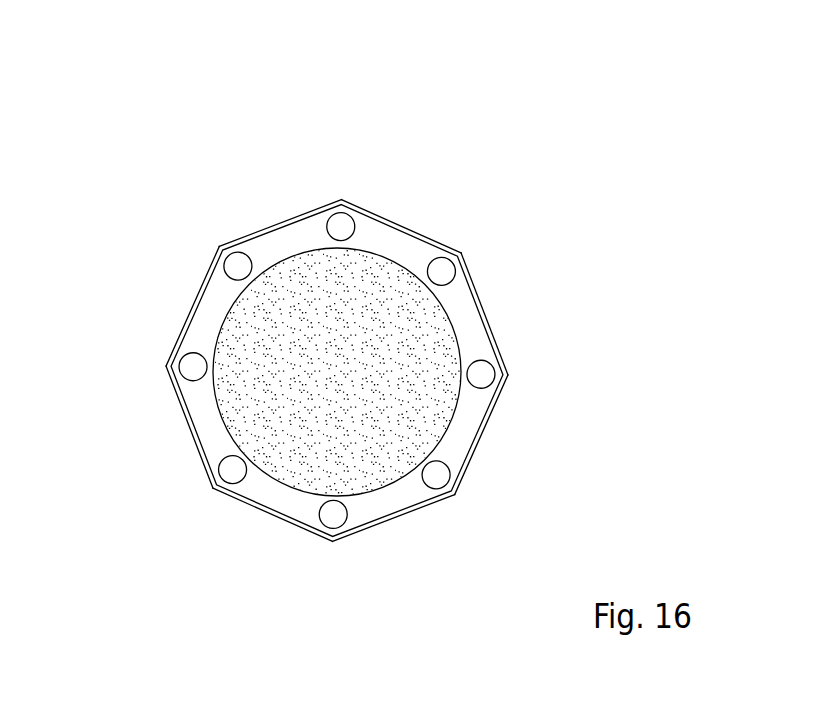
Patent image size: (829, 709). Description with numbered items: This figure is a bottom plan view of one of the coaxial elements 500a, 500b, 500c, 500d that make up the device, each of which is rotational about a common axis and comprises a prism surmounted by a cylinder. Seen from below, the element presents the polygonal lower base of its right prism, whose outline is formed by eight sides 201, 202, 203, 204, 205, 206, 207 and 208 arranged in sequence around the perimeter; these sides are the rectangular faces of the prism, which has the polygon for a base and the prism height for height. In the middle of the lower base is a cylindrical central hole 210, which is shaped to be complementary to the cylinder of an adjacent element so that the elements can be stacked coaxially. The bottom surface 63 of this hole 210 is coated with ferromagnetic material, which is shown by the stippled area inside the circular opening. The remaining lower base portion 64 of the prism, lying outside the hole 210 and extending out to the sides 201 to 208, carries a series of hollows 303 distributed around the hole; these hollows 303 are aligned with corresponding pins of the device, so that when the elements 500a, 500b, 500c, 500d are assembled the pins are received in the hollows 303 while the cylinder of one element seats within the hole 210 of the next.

The coaxial element 500a is at (345, 326).
The coaxial element 500b is at (345, 326).
The coaxial element 500c is at (345, 326).
The coaxial element 500d is at (510, 67).
The remaining lower base portion 64 is at (337, 370).
The bottom surface 63 is at (317, 400).
The cylindrical central hole 210 is at (427, 400).
The side 201 is at (481, 435).
The side 202 is at (484, 314).
The side 203 is at (401, 226).
The side 204 is at (280, 222).
The side 205 is at (192, 306).
The side 206 is at (189, 427).
The side 207 is at (273, 514).
The side 208 is at (394, 517).
The hollow 303 is at (232, 469).